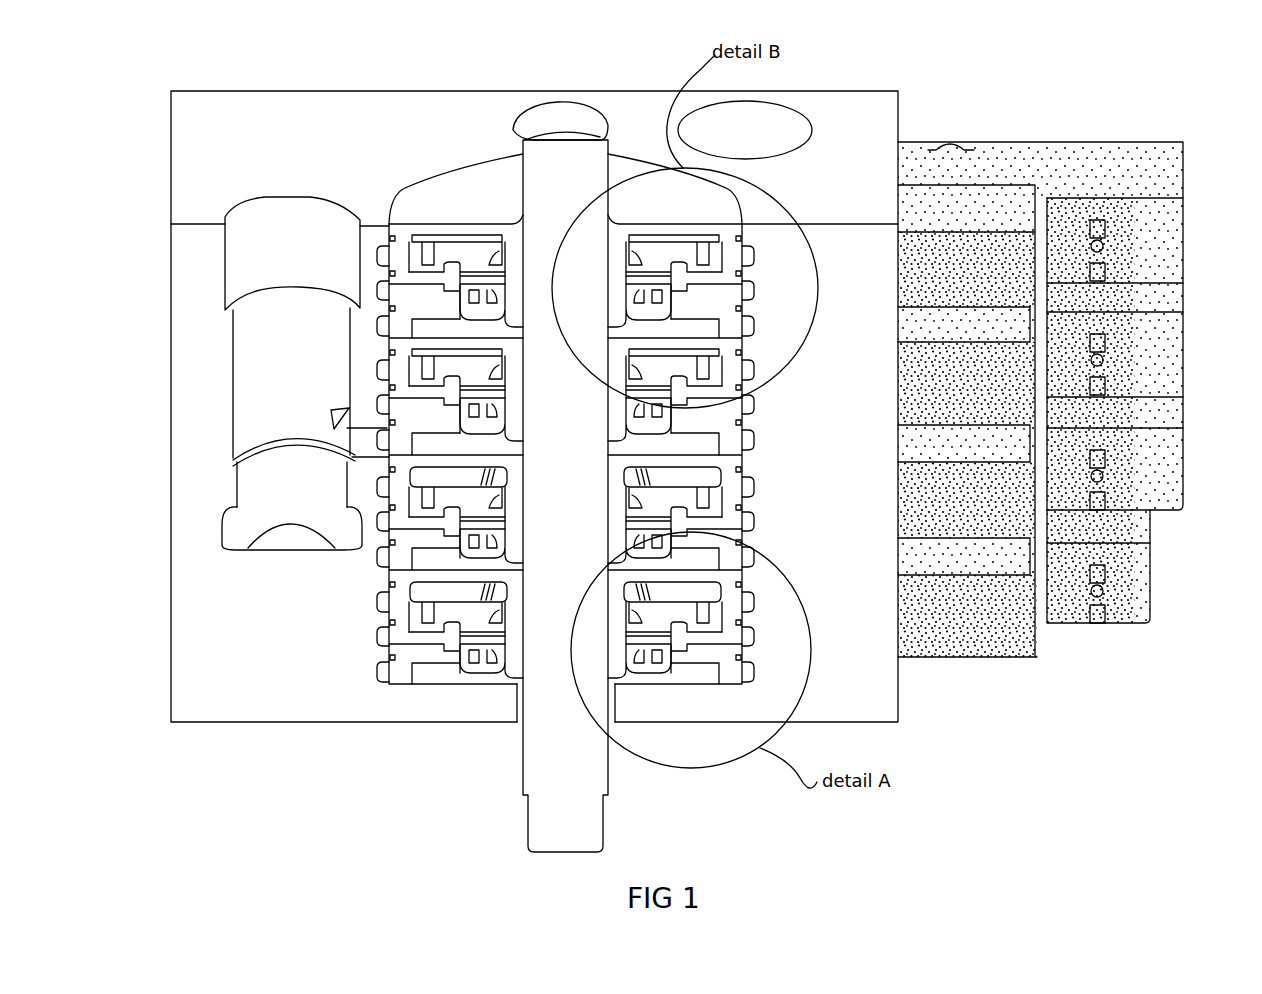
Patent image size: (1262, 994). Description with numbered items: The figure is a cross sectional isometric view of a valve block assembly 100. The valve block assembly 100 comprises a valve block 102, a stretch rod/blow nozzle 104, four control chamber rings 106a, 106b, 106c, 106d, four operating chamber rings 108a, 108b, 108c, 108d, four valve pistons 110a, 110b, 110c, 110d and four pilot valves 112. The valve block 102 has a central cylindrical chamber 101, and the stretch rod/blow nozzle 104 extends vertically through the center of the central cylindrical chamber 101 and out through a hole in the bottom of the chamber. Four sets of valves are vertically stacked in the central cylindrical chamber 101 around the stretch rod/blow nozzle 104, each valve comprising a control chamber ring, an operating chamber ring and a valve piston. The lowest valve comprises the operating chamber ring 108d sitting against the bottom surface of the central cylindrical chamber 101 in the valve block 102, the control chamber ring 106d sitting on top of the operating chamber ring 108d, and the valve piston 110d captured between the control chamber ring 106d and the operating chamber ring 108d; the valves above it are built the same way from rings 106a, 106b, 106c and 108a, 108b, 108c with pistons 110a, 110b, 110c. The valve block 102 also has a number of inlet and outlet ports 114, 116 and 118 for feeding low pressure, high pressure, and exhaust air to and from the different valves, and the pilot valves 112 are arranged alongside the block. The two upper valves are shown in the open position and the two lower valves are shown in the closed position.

The valve block assembly 100 is at (628, 372).
The central cylindrical chamber 101 is at (438, 685).
The valve block 102 is at (268, 722).
The stretch rod/blow nozzle 104 is at (603, 822).
The control chamber ring 106a is at (742, 198).
The control chamber ring 106b is at (740, 353).
The control chamber ring 106c is at (747, 473).
The control chamber ring 106d is at (745, 583).
The operating chamber ring 108a is at (740, 313).
The operating chamber ring 108b is at (753, 432).
The operating chamber ring 108c is at (743, 543).
The operating chamber ring 108d is at (753, 660).
The valve piston 110a is at (728, 298).
The valve piston 110b is at (708, 412).
The valve piston 110c is at (745, 523).
The valve piston 110d is at (745, 653).
The pilot valve 112 is at (1183, 152).
The port 114 is at (310, 197).
The port 116 is at (812, 120).
The port 118 is at (512, 115).